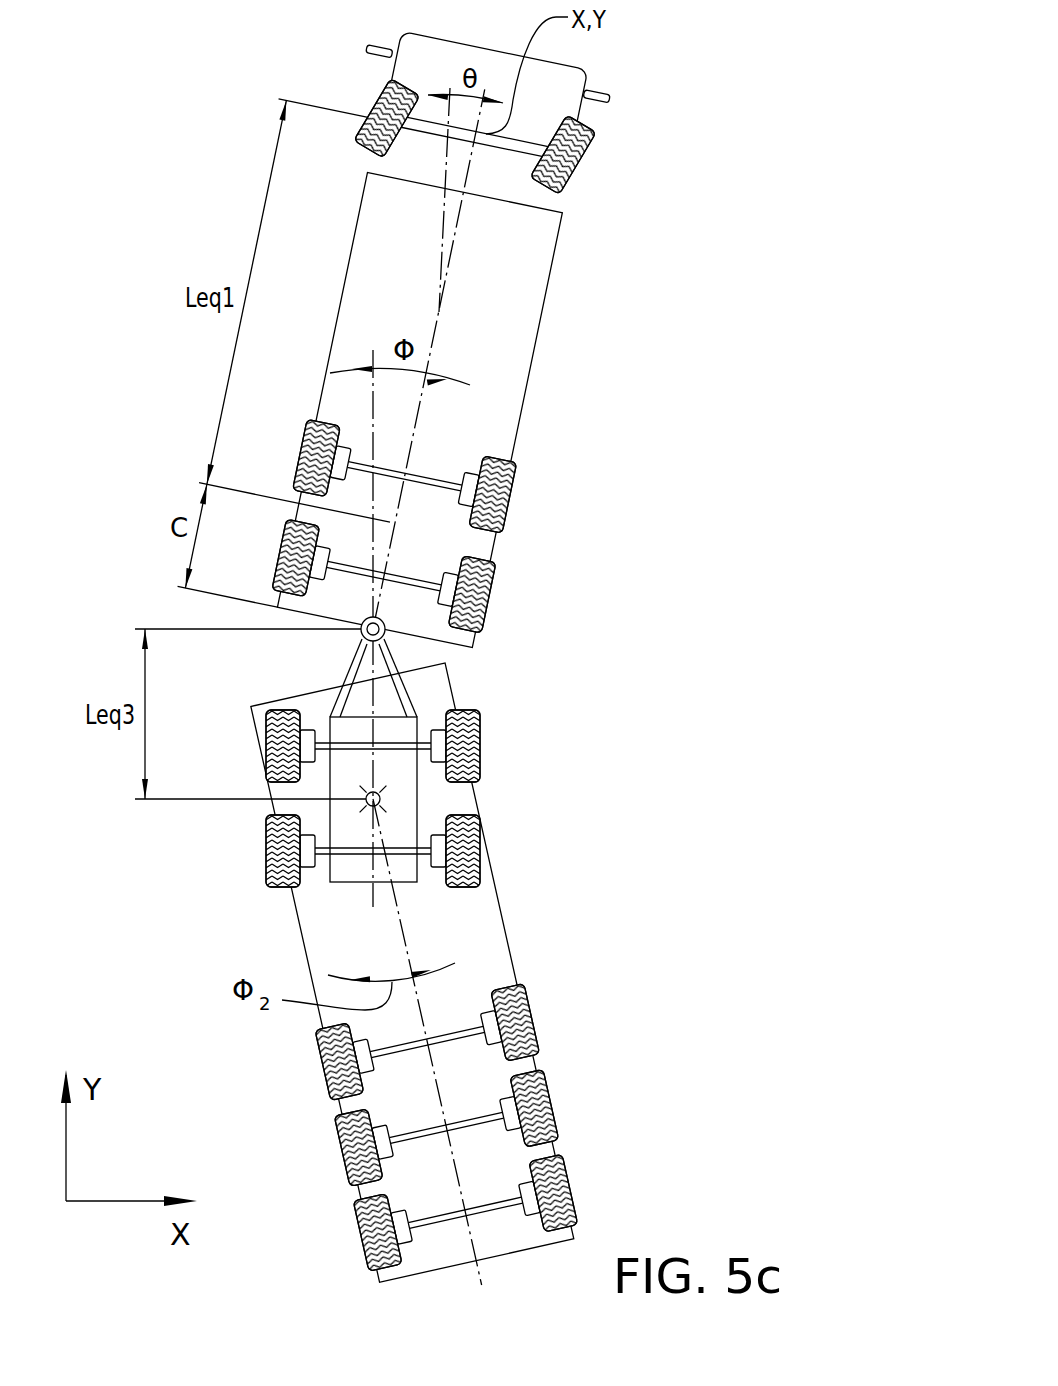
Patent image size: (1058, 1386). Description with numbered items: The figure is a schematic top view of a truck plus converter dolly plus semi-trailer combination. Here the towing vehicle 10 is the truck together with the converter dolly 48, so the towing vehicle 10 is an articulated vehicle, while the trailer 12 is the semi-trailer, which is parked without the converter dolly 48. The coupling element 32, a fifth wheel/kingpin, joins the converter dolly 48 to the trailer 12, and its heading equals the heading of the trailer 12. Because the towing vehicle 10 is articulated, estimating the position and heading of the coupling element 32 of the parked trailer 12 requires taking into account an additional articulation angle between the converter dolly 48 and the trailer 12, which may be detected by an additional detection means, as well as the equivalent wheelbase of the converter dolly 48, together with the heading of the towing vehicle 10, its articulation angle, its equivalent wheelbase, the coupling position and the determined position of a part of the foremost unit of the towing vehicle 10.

The towing vehicle 10 is at (494, 458).
The trailer 12 is at (502, 915).
The coupling element 32 is at (388, 800).
The converter dolly 48 is at (443, 628).